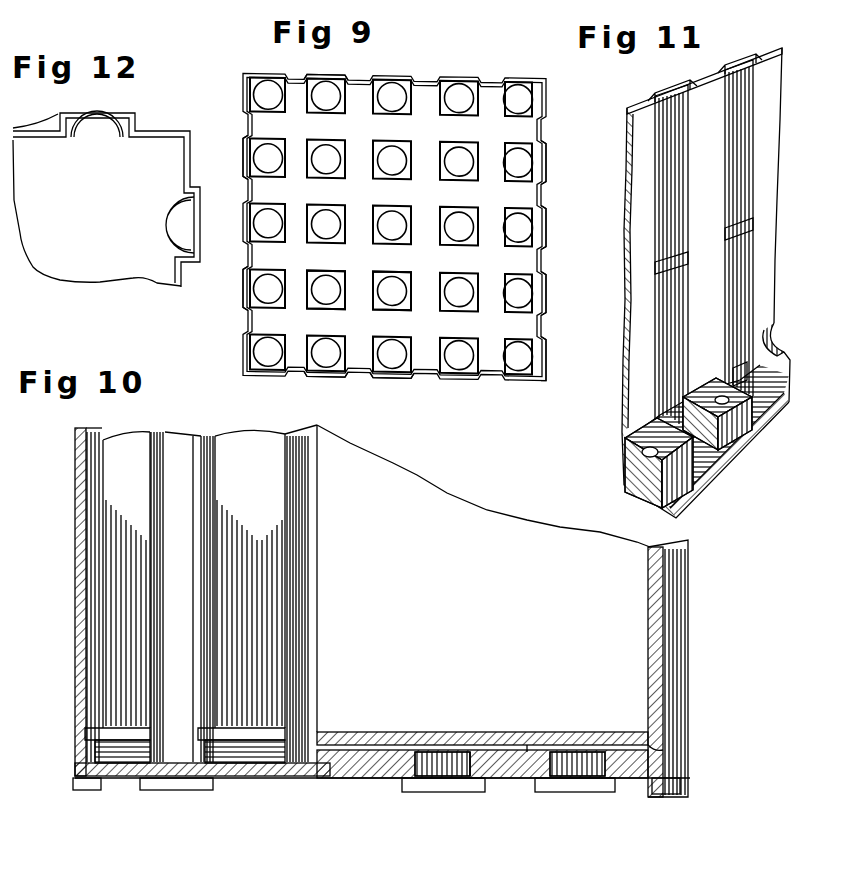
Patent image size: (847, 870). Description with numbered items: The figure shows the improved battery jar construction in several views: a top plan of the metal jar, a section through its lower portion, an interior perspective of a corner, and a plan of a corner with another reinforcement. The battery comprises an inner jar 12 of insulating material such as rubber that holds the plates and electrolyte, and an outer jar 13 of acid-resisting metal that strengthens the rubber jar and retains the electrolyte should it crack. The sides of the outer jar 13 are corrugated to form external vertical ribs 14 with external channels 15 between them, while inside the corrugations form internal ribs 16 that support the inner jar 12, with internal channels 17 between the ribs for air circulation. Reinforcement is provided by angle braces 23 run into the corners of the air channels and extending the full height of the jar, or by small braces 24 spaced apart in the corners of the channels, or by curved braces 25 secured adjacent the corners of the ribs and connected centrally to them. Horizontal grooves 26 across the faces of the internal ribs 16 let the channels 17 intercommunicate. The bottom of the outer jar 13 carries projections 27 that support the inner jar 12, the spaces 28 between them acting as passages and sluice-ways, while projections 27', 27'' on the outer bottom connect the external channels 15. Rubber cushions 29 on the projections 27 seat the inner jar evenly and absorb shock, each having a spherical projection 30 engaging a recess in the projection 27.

In FIG. 10, the inner jar 12 is at (483, 578).
In FIG. 9, the outer jar 13 is at (528, 128).
In FIG. 11, the outer jar 13 is at (615, 378).
In FIG. 10, the outer jar 13 is at (76, 640).
In FIG. 9, the external vertical ribs 14 is at (545, 205).
In FIG. 10, the external vertical ribs 14 is at (690, 662).
In FIG. 9, the vertical external channels 15 is at (543, 163).
In FIG. 9, the vertical internal ribs 16 is at (545, 296).
In FIG. 9, the internal channels 17 is at (535, 327).
In FIG. 9, the angle braces 23 is at (376, 78).
In FIG. 10, the angle braces 23 is at (203, 446).
In FIG. 11, the small braces 24 is at (690, 62).
In FIG. 12, the curved braces 25 is at (78, 133).
In FIG. 11, the horizontal grooves 26 is at (768, 328).
In FIG. 10, the horizontal grooves 26 is at (132, 740).
In FIG. 9, the projections 27 is at (359, 275).
In FIG. 11, the projections 27 is at (705, 441).
In FIG. 10, the projections 27 is at (508, 783).
In FIG. 10, the projections 27' is at (343, 803).
In FIG. 10, the projections 27'' is at (641, 804).
In FIG. 9, the spaces 28 is at (391, 225).
In FIG. 10, the spaces 28 is at (268, 792).
In FIG. 9, the cushions 29 is at (452, 352).
In FIG. 10, the cushions 29 is at (528, 762).
In FIG. 10, the spherical projection 30 is at (375, 757).